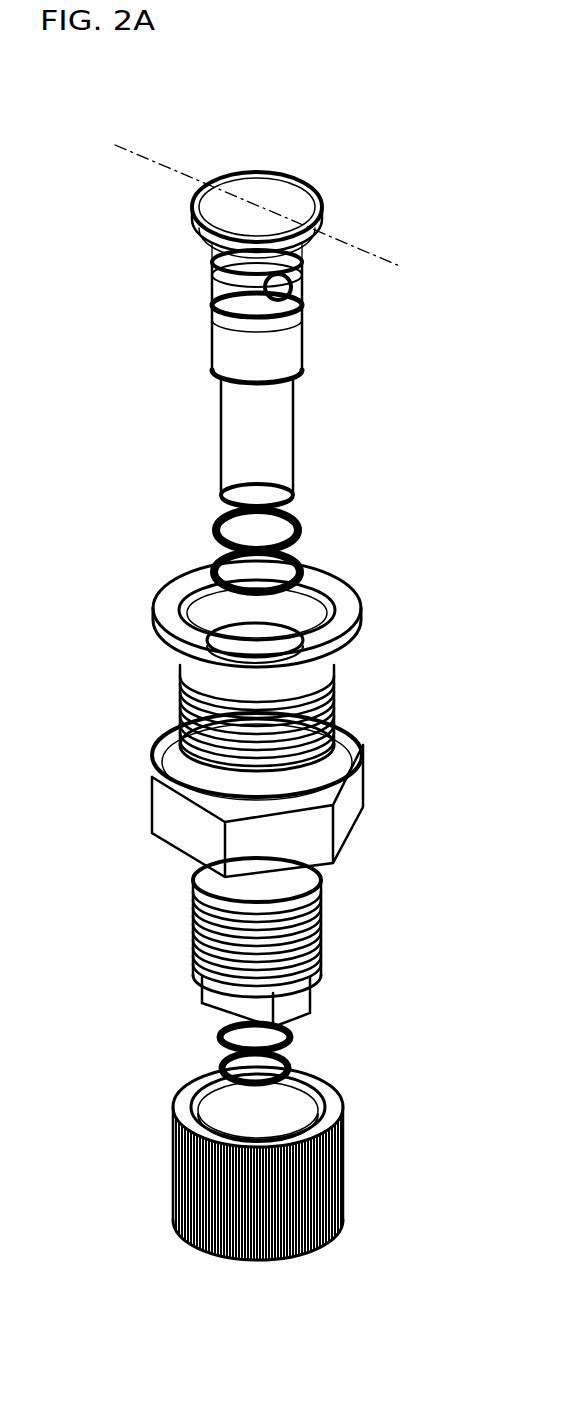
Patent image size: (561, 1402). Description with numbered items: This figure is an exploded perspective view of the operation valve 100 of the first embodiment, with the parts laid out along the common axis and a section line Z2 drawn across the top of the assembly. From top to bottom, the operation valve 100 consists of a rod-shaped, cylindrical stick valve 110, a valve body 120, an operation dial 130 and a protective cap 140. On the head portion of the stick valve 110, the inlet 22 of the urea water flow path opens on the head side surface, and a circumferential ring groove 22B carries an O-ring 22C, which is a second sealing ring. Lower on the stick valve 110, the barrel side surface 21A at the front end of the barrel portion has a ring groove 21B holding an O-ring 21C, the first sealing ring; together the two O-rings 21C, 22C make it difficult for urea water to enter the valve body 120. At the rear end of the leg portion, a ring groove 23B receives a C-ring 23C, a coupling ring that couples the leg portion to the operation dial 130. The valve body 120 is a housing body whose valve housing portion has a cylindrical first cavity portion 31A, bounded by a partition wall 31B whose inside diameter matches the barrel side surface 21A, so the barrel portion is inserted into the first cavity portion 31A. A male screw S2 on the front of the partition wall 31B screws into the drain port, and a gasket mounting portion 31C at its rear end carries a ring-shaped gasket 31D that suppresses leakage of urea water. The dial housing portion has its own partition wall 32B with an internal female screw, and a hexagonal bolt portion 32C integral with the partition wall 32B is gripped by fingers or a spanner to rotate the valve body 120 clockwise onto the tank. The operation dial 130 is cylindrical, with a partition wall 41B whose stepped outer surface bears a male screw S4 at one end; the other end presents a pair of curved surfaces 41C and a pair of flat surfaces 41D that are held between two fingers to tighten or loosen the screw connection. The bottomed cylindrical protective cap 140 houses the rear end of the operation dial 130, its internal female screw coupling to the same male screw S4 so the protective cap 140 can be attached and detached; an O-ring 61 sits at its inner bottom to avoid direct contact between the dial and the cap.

The operation valve 100 is at (322, 117).
The stick valve 110 is at (242, 357).
The inlet 22 is at (297, 287).
The ring groove 22B is at (215, 267).
The barrel side surface 21A is at (225, 340).
The ring groove 21B is at (267, 328).
The ring groove 23B is at (293, 485).
The O-ring 22C is at (297, 527).
The O-ring 21C is at (300, 578).
The valve body 120 is at (180, 823).
The gasket 31D is at (342, 620).
The first cavity portion 31A is at (260, 647).
The partition wall 31B is at (182, 670).
The gasket mounting portion 31C is at (335, 740).
The male screw S2 is at (363, 757).
The bolt portion 32C is at (348, 808).
The partition wall 32B is at (313, 883).
The operation dial 130 is at (225, 1008).
The partition wall 41B is at (195, 900).
The male screw S4 is at (323, 942).
The curved surfaces 41C is at (212, 995).
The flat surfaces 41D is at (295, 1000).
The C-ring 23C is at (297, 1037).
The O-ring 61 is at (288, 1060).
The protective cap 140 is at (168, 1160).
The section line Z2 is at (138, 78).